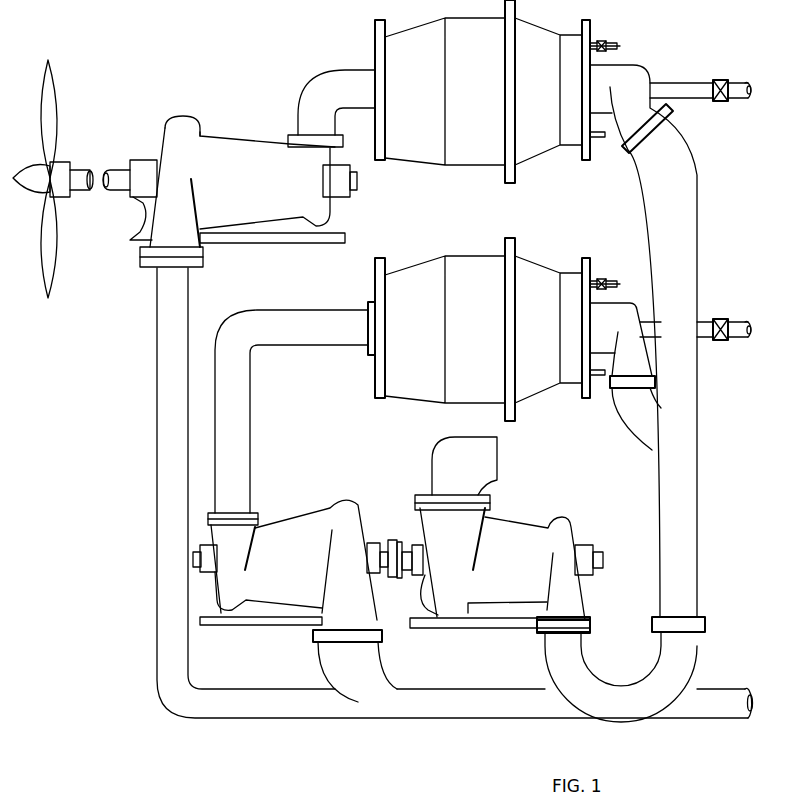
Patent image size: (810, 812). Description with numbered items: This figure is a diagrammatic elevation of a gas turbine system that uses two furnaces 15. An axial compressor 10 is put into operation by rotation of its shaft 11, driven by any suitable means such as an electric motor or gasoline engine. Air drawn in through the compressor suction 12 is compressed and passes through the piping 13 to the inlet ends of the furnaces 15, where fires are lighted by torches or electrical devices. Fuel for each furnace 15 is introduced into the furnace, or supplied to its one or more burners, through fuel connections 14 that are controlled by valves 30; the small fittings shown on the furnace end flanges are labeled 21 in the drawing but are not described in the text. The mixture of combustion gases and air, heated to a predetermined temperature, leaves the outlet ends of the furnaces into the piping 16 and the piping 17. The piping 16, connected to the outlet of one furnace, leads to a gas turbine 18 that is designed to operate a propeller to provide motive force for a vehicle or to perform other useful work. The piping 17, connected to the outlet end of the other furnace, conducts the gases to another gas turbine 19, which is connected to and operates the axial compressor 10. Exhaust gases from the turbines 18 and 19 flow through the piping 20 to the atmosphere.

The axial compressor 10 is at (515, 531).
The shaft 11 is at (603, 558).
The compressor suction 12 is at (497, 460).
The piping 13 is at (700, 178).
The fuel connections 14 is at (733, 96).
The furnace 15 is at (468, 256).
The piping 16 is at (318, 83).
The piping 17 is at (314, 310).
The gas turbine 18 is at (260, 135).
The gas turbine 19 is at (322, 510).
The piping 20 is at (157, 438).
The fuel injector 21 is at (600, 42).
The valves 30 is at (718, 82).